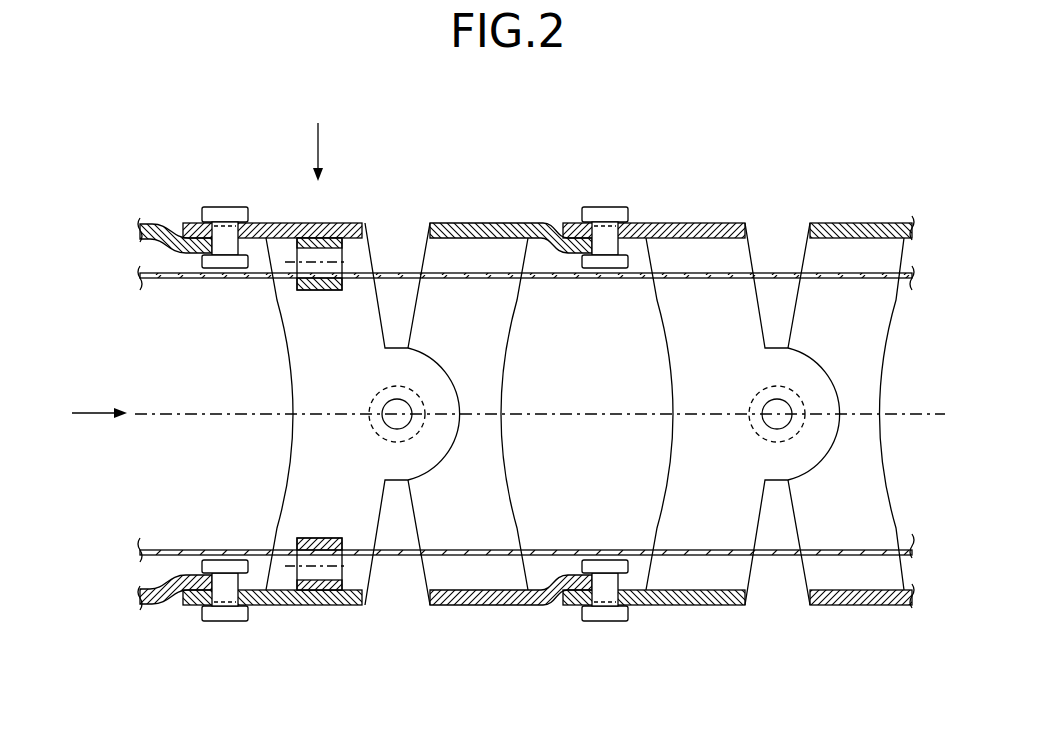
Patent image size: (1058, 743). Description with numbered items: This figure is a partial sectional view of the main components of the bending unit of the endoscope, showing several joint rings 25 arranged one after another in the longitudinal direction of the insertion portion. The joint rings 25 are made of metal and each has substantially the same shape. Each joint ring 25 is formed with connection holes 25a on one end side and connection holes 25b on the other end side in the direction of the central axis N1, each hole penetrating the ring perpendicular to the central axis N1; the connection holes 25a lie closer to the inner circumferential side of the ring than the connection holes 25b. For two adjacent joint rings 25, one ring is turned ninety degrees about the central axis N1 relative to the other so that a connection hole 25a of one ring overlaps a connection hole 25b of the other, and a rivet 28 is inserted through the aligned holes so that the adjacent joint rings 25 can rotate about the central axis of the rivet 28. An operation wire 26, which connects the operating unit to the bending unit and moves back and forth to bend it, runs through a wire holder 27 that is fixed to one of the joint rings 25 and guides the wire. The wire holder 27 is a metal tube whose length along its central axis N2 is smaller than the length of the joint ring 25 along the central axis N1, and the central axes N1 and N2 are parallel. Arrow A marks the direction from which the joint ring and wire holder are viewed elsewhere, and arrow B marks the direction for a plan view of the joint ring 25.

The joint ring 25 is at (273, 220).
The connection hole 25a is at (214, 247).
The connection hole 25b is at (220, 232).
The operation wire 26 is at (775, 273).
The wire holder 27 is at (333, 239).
The rivet 28 is at (225, 207).
The central axis N1 is at (922, 418).
The central axis N2 is at (347, 260).
The arrow A is at (89, 413).
The arrow B is at (317, 140).